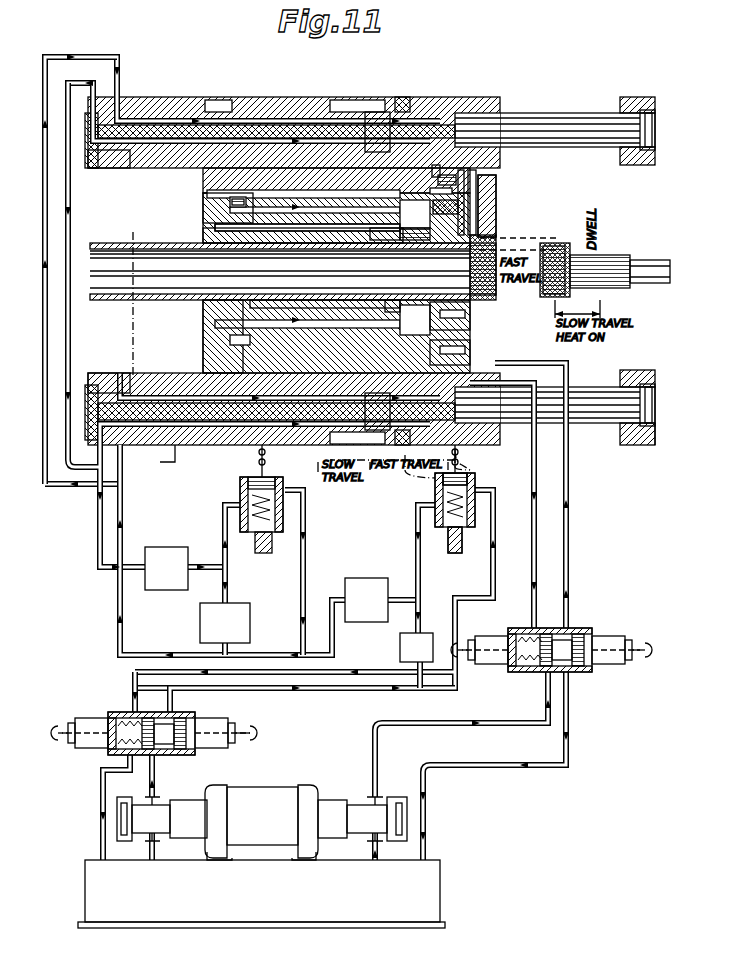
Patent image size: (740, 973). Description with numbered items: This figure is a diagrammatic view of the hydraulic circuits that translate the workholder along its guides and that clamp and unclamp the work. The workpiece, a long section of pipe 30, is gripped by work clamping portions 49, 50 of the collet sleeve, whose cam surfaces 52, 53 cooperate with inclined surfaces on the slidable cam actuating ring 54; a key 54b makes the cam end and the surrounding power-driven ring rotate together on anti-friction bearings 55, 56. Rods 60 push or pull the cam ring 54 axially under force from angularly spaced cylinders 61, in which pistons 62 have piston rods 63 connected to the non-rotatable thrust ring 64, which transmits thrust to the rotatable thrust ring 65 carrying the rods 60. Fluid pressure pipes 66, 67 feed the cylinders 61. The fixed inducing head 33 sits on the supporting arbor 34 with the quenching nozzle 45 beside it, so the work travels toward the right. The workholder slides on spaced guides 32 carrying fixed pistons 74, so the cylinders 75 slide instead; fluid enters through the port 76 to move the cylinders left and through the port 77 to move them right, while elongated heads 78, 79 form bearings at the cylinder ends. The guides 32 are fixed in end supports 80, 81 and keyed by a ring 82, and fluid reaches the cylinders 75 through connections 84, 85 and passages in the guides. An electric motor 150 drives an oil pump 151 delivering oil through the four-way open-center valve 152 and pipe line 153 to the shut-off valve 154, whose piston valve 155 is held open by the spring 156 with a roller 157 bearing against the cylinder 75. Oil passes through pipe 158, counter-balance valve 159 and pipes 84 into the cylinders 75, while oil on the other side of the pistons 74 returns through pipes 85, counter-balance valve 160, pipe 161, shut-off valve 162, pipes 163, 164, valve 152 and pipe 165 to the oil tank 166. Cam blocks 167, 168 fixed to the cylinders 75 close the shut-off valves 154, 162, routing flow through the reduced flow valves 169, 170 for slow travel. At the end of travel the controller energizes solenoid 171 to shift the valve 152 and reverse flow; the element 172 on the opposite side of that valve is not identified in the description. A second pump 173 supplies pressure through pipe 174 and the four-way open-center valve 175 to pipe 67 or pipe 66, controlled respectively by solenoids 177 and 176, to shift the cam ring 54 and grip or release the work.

The pipe 30 is at (135, 300).
The spaced guides 32 is at (580, 390).
The inducing head 33 is at (557, 243).
The supporting arbor 34 is at (615, 260).
The quenching nozzle 45 is at (566, 252).
The work clamping portion 49 is at (380, 240).
The work clamping portion 50 is at (215, 240).
The cam surface 52 is at (225, 222).
The cam surface 53 is at (395, 283).
The slidable cam actuating ring 54 is at (265, 231).
The key 54b is at (230, 202).
The anti-friction bearing 55 is at (225, 348).
The anti-friction bearing 56 is at (365, 300).
The rods 60 is at (470, 322).
The cylinders 61 is at (470, 176).
The pistons 62 is at (415, 240).
The piston rods 63 is at (464, 190).
The non-rotatable thrust ring 64 is at (476, 205).
The rotatable thrust ring 65 is at (496, 220).
The fluid pressure pipe 66 is at (532, 519).
The fluid pressure pipe 67 is at (570, 545).
The pistons 74 is at (385, 445).
The cylinders 75 is at (232, 440).
The port 76 is at (408, 445).
The port 77 is at (310, 440).
The elongated head 78 is at (500, 430).
The elongated head 79 is at (205, 100).
The end support 80 is at (632, 456).
The end support 81 is at (120, 380).
The ring 82 is at (660, 440).
The connections 84 is at (128, 484).
The connections 85 is at (98, 560).
The electric motor 150 is at (283, 833).
The oil pump 151 is at (165, 808).
The four-way open-center valve 152 is at (160, 702).
The pipe line 153 is at (330, 691).
The shut-off valve 154 is at (435, 497).
The piston valve 155 is at (470, 484).
The spring 156 is at (448, 535).
The roller 157 is at (460, 477).
The pipe 158 is at (416, 545).
The counter-balance valve 159 is at (366, 600).
The counter-balance valve 160 is at (166, 568).
The pipe 161 is at (225, 525).
The shut-off valve 162 is at (242, 490).
The pipe 163 is at (306, 548).
The pipe 164 is at (132, 680).
The pipe 165 is at (100, 838).
The oil tank 166 is at (275, 901).
The cam block 167 is at (327, 462).
The cam block 168 is at (175, 462).
The reduced flow valve 169 is at (416, 647).
The reduced flow valve 170 is at (225, 623).
The solenoid 171 is at (88, 710).
The handle 172 is at (228, 718).
The pump 173 is at (352, 803).
The pipe 174 is at (495, 722).
The four-way open-center valve 175 is at (560, 620).
The solenoid 176 is at (484, 636).
The solenoid 177 is at (620, 636).